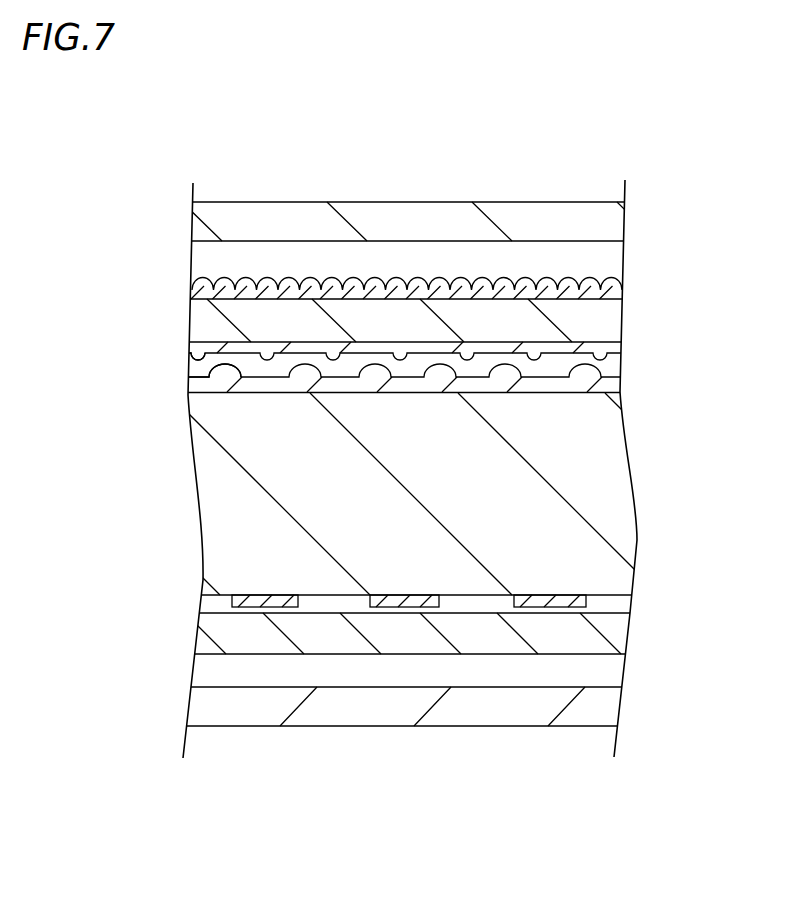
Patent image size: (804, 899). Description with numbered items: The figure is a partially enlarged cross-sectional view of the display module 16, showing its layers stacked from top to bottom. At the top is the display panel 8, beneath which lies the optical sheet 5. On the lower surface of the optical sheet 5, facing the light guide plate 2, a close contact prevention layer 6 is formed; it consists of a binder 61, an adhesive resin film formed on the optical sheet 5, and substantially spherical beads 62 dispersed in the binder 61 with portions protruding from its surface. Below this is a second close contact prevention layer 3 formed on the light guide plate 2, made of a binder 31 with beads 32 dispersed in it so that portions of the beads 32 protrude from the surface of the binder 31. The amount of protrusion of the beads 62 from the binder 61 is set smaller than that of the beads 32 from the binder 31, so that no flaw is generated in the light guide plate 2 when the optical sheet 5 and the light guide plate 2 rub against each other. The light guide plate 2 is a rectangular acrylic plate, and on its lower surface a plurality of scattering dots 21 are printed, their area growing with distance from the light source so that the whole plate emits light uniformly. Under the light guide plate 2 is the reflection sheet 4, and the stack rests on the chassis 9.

The display module 16 is at (702, 105).
The display panel 8 is at (612, 224).
The optical sheet 5 is at (614, 307).
The close contact prevention layer 3 is at (435, 382).
The binder 31 is at (611, 384).
The beads 32 is at (605, 363).
The light guide plate 2 is at (613, 462).
The scattering dots 21 is at (586, 600).
The reflection sheet 4 is at (620, 633).
The chassis 9 is at (609, 706).
The close contact prevention layer 6 is at (163, 365).
The binder 61 is at (188, 350).
The beads 62 is at (186, 367).